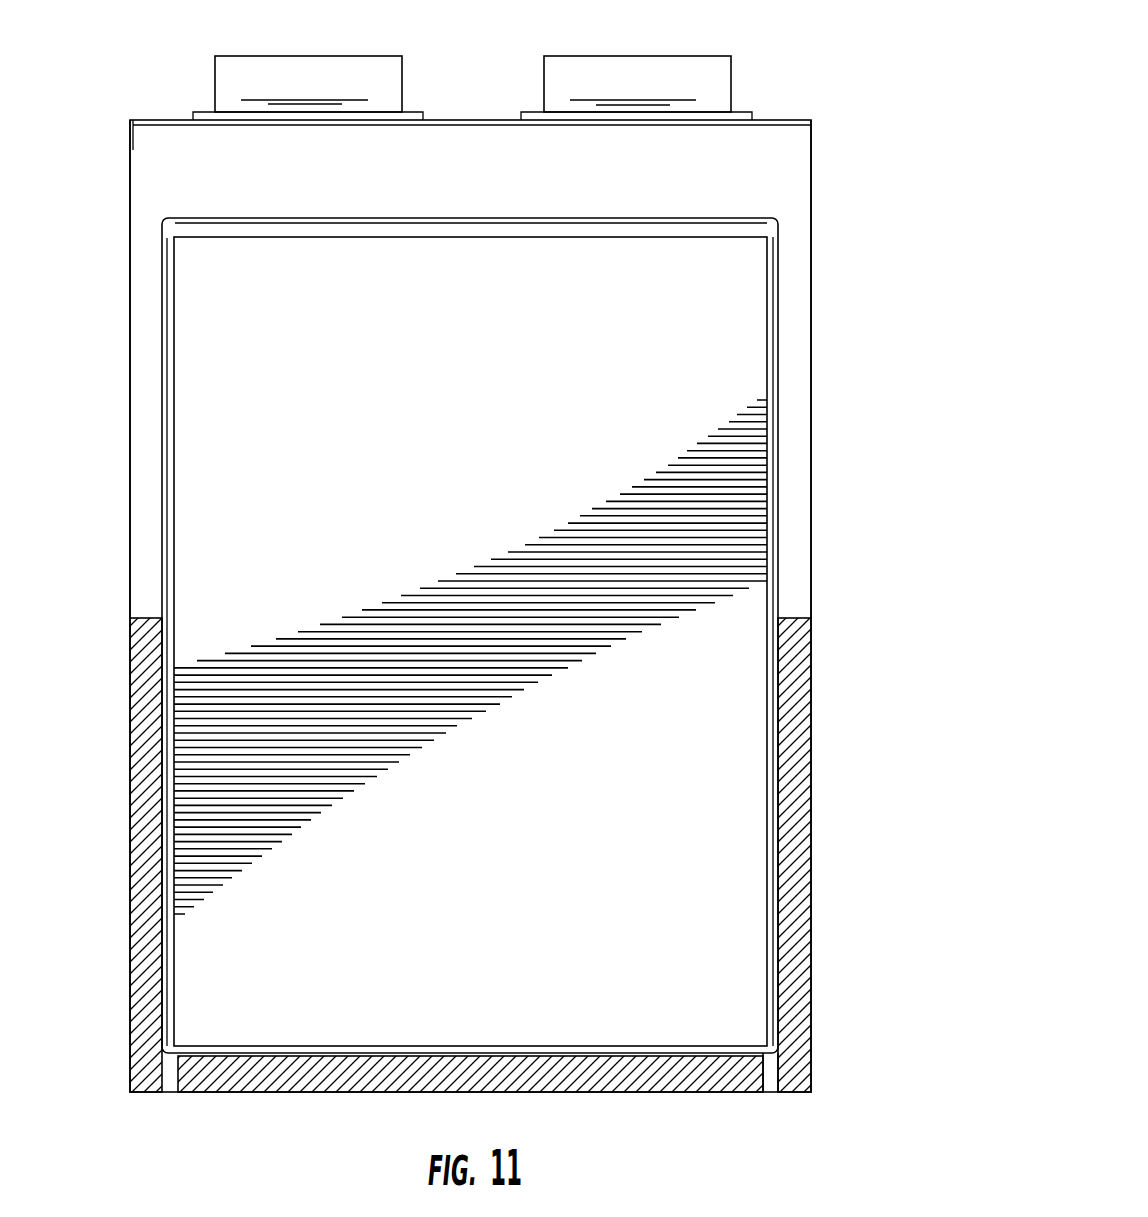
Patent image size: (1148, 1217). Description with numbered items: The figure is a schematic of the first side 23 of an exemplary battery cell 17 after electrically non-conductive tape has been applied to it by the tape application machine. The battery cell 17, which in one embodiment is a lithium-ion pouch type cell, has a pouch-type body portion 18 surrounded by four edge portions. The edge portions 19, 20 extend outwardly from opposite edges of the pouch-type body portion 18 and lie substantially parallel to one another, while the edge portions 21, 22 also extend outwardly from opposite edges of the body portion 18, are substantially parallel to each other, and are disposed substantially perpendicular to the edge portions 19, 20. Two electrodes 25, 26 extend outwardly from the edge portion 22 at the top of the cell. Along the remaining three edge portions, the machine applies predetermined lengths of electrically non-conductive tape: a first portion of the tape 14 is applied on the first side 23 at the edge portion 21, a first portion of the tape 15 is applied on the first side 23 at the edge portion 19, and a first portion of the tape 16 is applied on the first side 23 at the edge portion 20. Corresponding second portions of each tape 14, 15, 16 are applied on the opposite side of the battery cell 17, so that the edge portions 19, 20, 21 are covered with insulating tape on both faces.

The electrically non-conductive tape 14 is at (548, 1078).
The electrically non-conductive tape 15 is at (127, 827).
The electrically non-conductive tape 16 is at (798, 877).
The battery cell 17 is at (864, 96).
The pouch-type body portion 18 is at (203, 547).
The edge portion 19 is at (140, 401).
The edge portion 20 is at (800, 448).
The edge portion 21 is at (771, 1088).
The edge portion 22 is at (798, 187).
The first side 23 is at (738, 373).
The electrode 25 is at (392, 73).
The electrode 26 is at (718, 73).